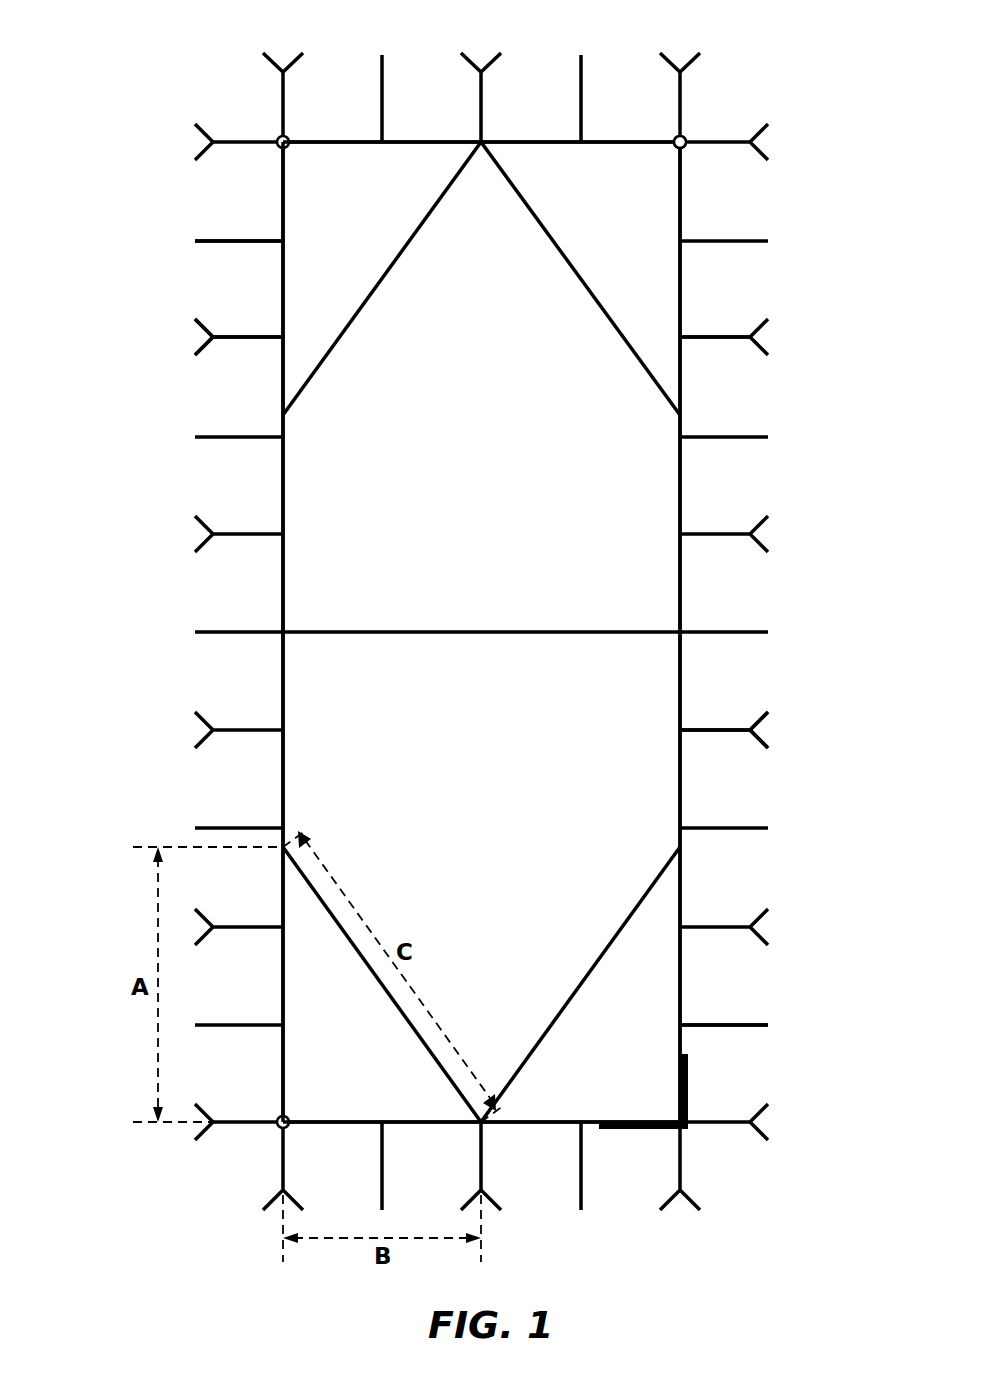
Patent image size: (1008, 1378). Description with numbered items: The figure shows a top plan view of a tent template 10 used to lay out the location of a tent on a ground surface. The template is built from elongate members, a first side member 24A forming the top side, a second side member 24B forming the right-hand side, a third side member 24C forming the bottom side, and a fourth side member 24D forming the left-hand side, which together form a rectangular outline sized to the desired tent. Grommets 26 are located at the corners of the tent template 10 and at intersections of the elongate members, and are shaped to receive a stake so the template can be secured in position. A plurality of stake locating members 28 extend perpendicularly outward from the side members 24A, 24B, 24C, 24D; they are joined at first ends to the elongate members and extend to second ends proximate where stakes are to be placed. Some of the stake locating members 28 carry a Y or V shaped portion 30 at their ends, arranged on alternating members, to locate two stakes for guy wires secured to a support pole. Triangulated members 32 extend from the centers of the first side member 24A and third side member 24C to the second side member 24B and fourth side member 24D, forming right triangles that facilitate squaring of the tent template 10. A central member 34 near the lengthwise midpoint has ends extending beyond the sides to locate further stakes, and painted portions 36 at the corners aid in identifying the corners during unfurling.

The tent template 10 is at (118, 73).
The first side member 24A is at (331, 140).
The second side member 24B is at (680, 596).
The third side member 24C is at (622, 1130).
The fourth side member 24D is at (283, 486).
The grommets 26 is at (684, 136).
The stake locating members 28 is at (213, 239).
The Y or V shaped portion 30 is at (197, 325).
The triangulated members 32 is at (375, 295).
The central member 34 is at (500, 632).
The painted portions 36 is at (688, 1090).